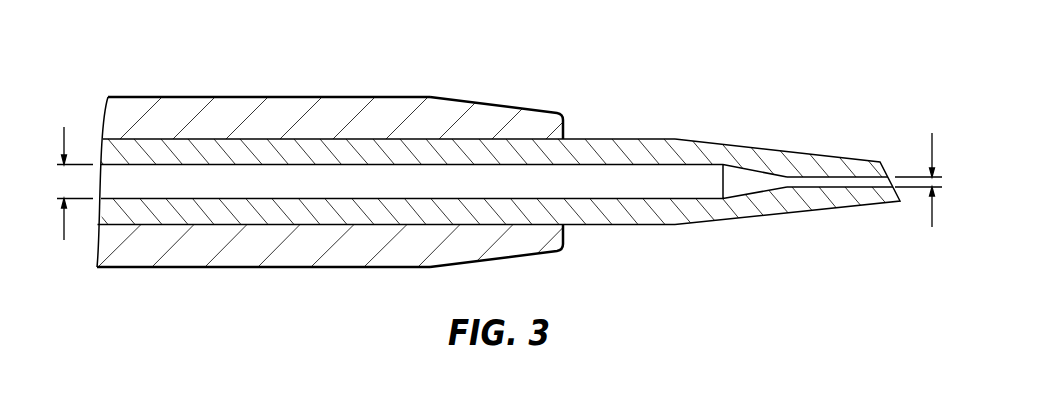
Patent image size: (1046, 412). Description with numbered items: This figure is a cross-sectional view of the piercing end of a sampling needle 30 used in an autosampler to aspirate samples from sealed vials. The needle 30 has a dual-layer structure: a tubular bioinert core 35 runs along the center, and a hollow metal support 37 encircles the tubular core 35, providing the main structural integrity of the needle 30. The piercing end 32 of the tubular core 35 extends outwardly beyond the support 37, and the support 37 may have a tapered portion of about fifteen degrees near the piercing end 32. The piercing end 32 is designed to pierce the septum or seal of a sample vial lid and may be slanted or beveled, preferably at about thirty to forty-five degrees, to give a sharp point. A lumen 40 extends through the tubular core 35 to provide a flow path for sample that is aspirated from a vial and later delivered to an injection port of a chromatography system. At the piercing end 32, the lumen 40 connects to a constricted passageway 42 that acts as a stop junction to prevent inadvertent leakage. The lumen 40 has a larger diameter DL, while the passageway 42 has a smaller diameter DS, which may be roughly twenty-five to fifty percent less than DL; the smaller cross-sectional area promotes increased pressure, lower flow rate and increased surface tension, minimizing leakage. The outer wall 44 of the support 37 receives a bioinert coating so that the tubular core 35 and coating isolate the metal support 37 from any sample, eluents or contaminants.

The needle 30 is at (463, 104).
The piercing end 32 is at (689, 118).
The tubular bioinert core 35 is at (577, 147).
The hollow metal support 37 is at (167, 110).
The lumen 40 is at (610, 196).
The constricted passageway 42 is at (815, 186).
The outer wall 44 is at (333, 97).
The lumen diameter DL is at (70, 169).
The passageway diameter DS is at (920, 169).